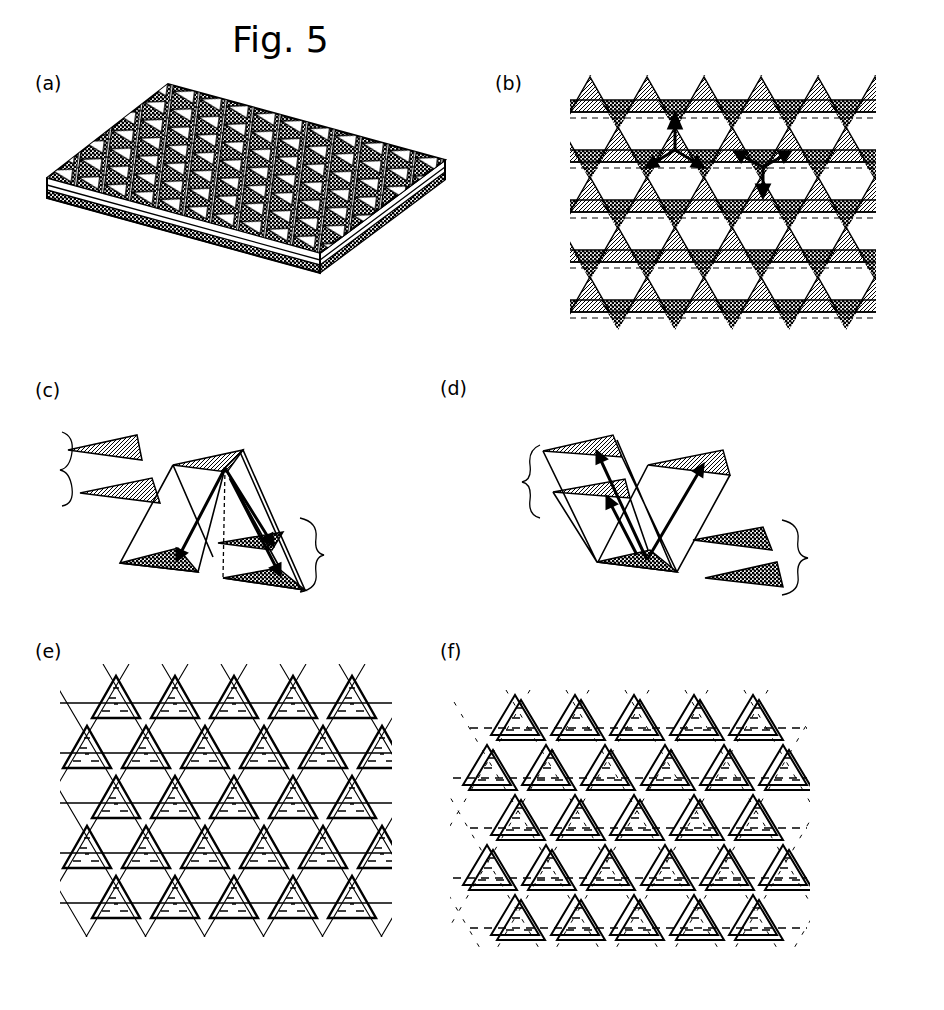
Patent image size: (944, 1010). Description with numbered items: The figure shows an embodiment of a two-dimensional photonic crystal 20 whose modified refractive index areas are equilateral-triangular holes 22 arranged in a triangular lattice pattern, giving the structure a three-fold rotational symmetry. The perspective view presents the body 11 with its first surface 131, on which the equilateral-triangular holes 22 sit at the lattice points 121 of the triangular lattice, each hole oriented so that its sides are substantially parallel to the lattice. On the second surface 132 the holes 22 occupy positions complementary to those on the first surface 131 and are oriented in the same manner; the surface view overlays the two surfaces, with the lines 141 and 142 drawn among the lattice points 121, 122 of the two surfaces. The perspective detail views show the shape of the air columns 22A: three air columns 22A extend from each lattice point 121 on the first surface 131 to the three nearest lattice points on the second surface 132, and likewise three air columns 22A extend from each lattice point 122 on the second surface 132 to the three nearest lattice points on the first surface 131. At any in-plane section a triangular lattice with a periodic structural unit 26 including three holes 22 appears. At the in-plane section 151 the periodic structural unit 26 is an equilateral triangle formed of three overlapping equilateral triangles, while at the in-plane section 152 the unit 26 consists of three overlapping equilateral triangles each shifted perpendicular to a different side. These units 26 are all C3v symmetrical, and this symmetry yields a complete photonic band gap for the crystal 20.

The two-dimensional photonic crystal 20 is at (398, 279).
The equilateral-triangular hole 22 is at (323, 125).
The air column 22A is at (127, 548).
The body 11 is at (444, 164).
The lattice point 121 is at (223, 465).
The lattice point 122 is at (583, 150).
The first surface 131 is at (425, 155).
The second surface 132 is at (222, 257).
The first boundary line 141 is at (583, 250).
The second boundary line 142 is at (577, 287).
The in-plane section 151 is at (402, 213).
The in-plane section 152 is at (377, 227).
The periodic structural unit 26 is at (367, 695).